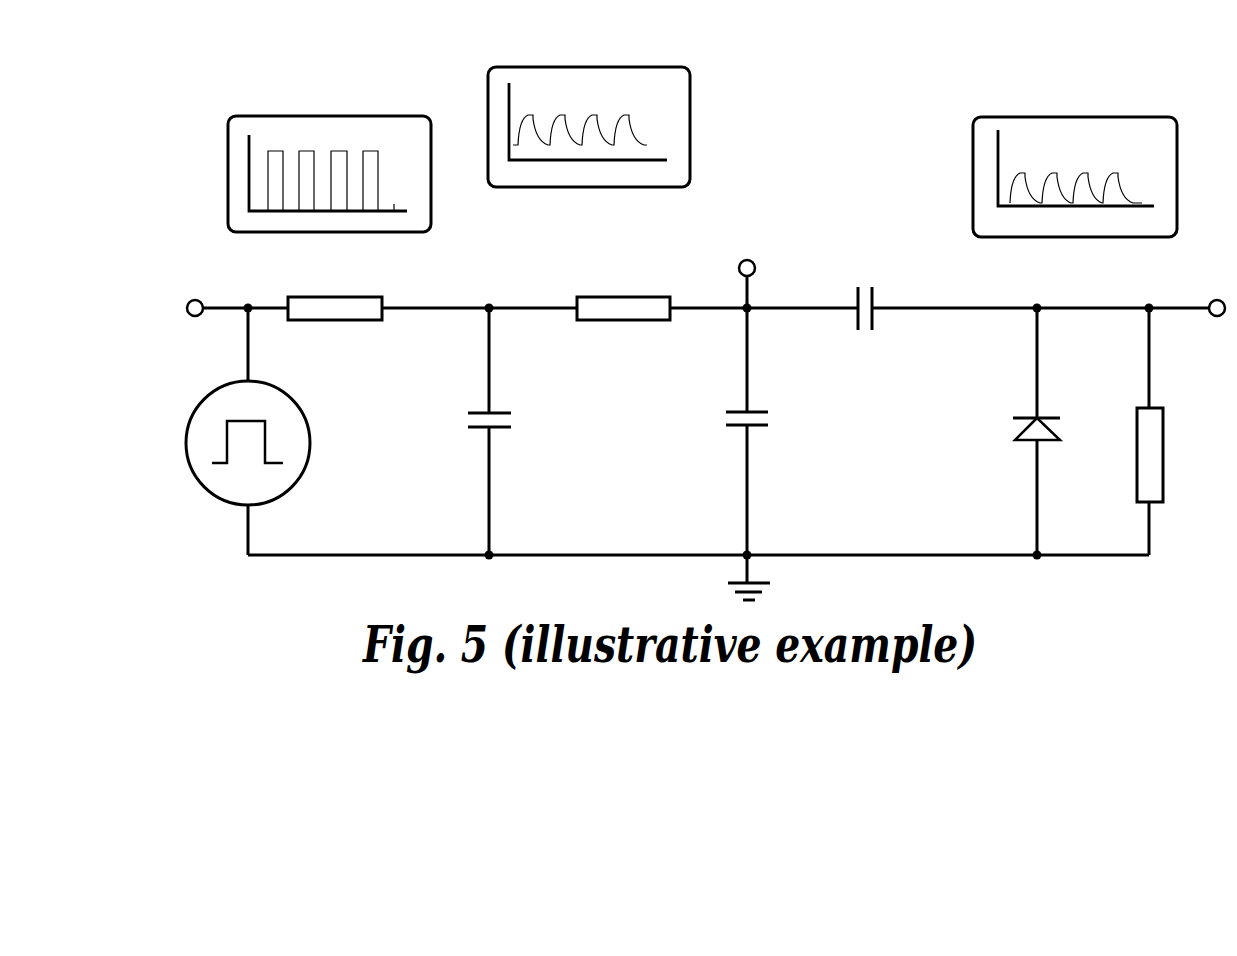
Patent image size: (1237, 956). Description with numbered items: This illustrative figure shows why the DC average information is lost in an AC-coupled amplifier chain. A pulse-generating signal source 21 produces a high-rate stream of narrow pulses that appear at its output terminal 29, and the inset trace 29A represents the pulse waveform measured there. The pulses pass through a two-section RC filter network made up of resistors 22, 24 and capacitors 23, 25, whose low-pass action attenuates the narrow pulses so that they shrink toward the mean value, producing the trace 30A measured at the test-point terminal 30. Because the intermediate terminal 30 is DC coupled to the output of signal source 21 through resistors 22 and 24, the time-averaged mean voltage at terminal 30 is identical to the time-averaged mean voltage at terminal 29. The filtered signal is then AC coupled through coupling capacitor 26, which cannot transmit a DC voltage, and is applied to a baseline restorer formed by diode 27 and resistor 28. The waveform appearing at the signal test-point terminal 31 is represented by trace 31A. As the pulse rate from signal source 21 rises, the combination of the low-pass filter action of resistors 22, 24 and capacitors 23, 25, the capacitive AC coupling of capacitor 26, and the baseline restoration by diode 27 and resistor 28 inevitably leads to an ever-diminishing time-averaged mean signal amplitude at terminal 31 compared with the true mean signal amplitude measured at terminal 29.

The pulse-generating signal source 21 is at (248, 431).
The RC filter network resistor 22 is at (335, 326).
The RC filter network capacitor 23 is at (499, 431).
The RC filter network resistor 24 is at (623, 327).
The RC filter network capacitor 25 is at (758, 431).
The coupling capacitor 26 is at (880, 327).
The diode 27 is at (1026, 431).
The resistor 28 is at (1132, 431).
The output terminal of pulse generator 29 is at (197, 326).
The representation of pulse waveform at terminal 29 29A is at (203, 293).
The test-point terminal after 2-section RC filter network 30 is at (767, 284).
The representation of pulse-waveform on terminal 30 30A is at (738, 258).
The signal test-point terminal at baseline restorer 31 is at (1218, 327).
The representation of pulse-waveform at terminal 31 31A is at (1208, 293).